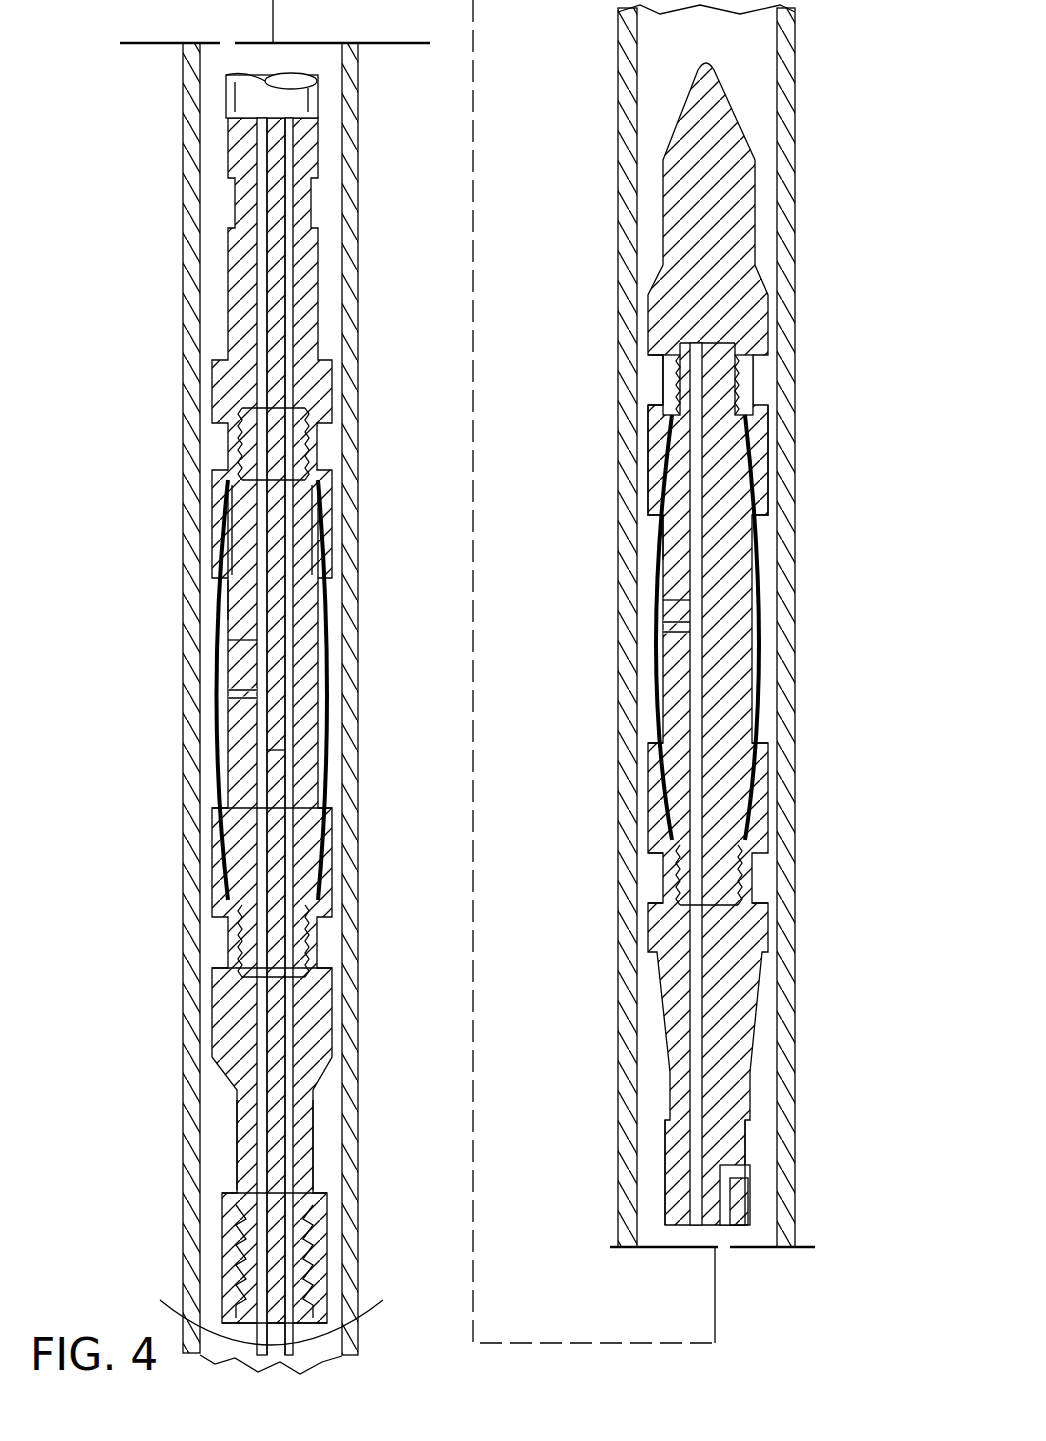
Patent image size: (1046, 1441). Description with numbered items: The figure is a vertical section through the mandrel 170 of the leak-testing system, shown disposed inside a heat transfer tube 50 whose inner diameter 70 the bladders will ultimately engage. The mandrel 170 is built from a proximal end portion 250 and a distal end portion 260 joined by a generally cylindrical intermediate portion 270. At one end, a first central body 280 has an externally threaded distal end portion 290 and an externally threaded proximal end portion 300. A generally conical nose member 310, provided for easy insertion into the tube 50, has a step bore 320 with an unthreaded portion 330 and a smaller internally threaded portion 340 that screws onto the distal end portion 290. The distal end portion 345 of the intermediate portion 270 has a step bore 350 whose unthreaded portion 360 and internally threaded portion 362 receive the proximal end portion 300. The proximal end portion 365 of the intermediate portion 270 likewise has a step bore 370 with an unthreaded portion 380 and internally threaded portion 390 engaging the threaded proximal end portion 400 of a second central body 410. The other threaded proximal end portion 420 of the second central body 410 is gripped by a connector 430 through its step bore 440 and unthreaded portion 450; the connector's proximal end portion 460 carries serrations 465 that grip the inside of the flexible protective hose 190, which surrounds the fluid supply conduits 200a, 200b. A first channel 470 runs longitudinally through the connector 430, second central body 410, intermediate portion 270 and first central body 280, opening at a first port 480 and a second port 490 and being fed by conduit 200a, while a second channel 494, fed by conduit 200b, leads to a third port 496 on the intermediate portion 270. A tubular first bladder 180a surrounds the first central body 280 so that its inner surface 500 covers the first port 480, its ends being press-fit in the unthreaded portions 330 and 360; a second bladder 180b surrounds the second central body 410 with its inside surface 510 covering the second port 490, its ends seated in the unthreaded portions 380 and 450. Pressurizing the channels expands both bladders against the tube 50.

The heat transfer tube 50 is at (358, 105).
The inner diameter 70 is at (342, 55).
The mandrel 170 is at (325, 293).
The intermediate portion 270 is at (240, 147).
The distal end portion 260 is at (313, 420).
The step bore 370 is at (258, 440).
The internally threaded portion 390 is at (248, 465).
The proximal end portion 400 is at (232, 514).
The proximal end portion 365 is at (245, 540).
The unthreaded portion 380 is at (272, 546).
The inside surface 510 is at (230, 646).
The second central body 410 is at (240, 616).
The second bladder 180b is at (320, 692).
The second port 490 is at (235, 706).
The first channel 470 is at (255, 753).
The unthreaded portion 450 is at (225, 860).
The proximal end portion 420 is at (240, 912).
The step bore 440 is at (250, 946).
The connector 430 is at (230, 1037).
The proximal end portion 460 is at (235, 1168).
The serrations 465 is at (240, 1212).
The flexible protective hose 190 is at (240, 1272).
The fluid supply conduit 200a is at (241, 1316).
The fluid supply conduit 200b is at (338, 1309).
The nose member 310 is at (690, 137).
The step bore 320 is at (700, 353).
The proximal end portion 250 is at (660, 388).
The internally threaded portion 340 is at (700, 412).
The distal end portion 290 is at (665, 447).
The unthreaded portion 330 is at (675, 467).
The first central body 280 is at (660, 557).
The inner surface 500 is at (685, 602).
The first bladder 180a is at (765, 647).
The first port 480 is at (675, 642).
The unthreaded portion 360 is at (672, 792).
The step bore 350 is at (690, 850).
The distal end portion 345 is at (745, 888).
The internally threaded portion 362 is at (682, 852).
The proximal end portion 300 is at (668, 907).
The third port 496 is at (745, 1152).
The second channel 494 is at (730, 1197).